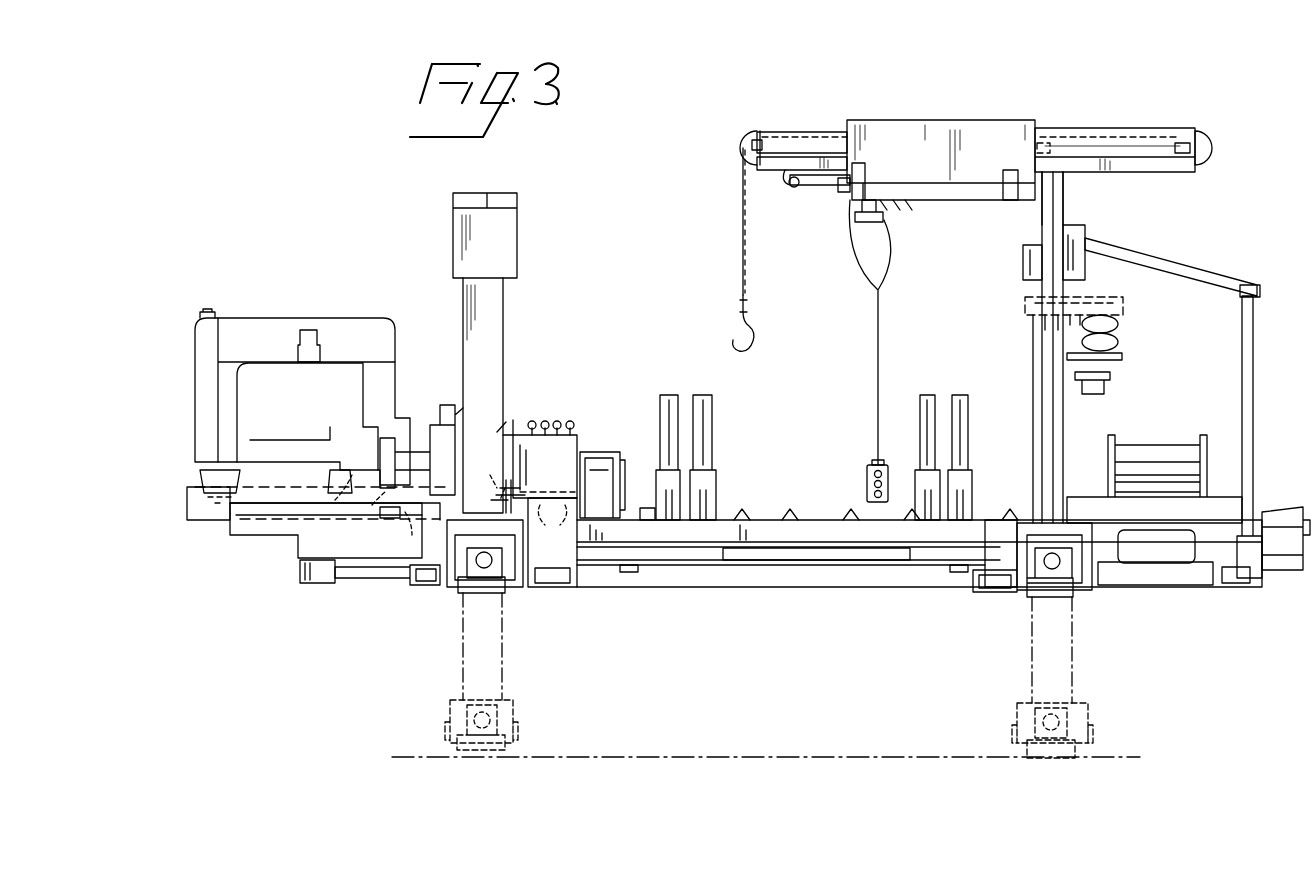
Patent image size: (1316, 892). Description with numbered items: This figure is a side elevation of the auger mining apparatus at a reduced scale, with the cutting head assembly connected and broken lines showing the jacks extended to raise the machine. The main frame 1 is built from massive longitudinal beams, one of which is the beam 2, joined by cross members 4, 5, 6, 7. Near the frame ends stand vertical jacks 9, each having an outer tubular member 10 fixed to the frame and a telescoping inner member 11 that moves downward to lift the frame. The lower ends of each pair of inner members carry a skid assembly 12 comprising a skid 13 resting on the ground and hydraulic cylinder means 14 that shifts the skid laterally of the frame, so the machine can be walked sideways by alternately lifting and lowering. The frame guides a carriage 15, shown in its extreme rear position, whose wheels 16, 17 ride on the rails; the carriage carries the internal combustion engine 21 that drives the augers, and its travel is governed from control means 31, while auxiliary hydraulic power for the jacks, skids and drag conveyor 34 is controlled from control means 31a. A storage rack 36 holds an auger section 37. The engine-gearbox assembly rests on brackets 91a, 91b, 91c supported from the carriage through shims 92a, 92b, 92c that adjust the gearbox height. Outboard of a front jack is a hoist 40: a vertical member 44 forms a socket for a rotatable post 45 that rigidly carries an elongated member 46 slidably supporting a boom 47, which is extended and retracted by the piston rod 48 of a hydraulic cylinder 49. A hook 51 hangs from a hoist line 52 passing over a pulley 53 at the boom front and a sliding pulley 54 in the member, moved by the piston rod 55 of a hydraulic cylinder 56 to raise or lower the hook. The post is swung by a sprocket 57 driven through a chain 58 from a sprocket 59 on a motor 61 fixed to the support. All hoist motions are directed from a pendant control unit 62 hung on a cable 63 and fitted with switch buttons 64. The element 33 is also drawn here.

The main frame 1 is at (697, 590).
The longitudinally extending beam 2 is at (836, 566).
The cross member 4 is at (309, 584).
The cross member 5 is at (428, 588).
The cross member 6 is at (566, 587).
The cross member 7 is at (1000, 592).
The vertical jack 9 is at (508, 336).
The outer tubular member 10 is at (506, 298).
The telescoping inner member 11 is at (503, 683).
The skid assembly 12 is at (515, 716).
The skid 13 is at (460, 758).
The hydraulic cylinder means 14 is at (1042, 575).
The carriage 15 is at (187, 513).
The wheel 16 is at (570, 490).
The wheel 17 is at (348, 483).
The internal combustion engine 21 is at (276, 318).
The control means 31 is at (506, 422).
The control means 31a is at (578, 432).
The drive unit 33 is at (1217, 580).
The drag conveyor 34 is at (1162, 438).
The storage rack 36 is at (767, 518).
The auger section 37 is at (256, 386).
The hoist 40 is at (1068, 196).
The vertical member 44 is at (1050, 430).
The post 45 is at (1010, 265).
The laterally extending elongated member 46 is at (960, 122).
The boom 47 is at (768, 176).
The piston rod 48 is at (820, 196).
The hydraulic cylinder 49 is at (842, 200).
The hook 51 is at (735, 346).
The hoist line 52 is at (742, 233).
The pulley 53 is at (748, 158).
The pulley 54 is at (1212, 166).
The piston rod 55 is at (1155, 144).
The hydraulic cylinder 56 is at (1047, 128).
The sprocket 57 is at (1027, 313).
The chain 58 is at (1082, 300).
The sprocket 59 is at (1124, 306).
The motor 61 is at (1120, 346).
The pendant control unit 62 is at (866, 478).
The cable 63 is at (882, 335).
The switch buttons 64 is at (872, 466).
The bracket 91a is at (205, 477).
The bracket 91b is at (372, 512).
The bracket 91c is at (530, 526).
The shim 92a is at (196, 501).
The shim 92b is at (415, 530).
The shim 92c is at (496, 483).